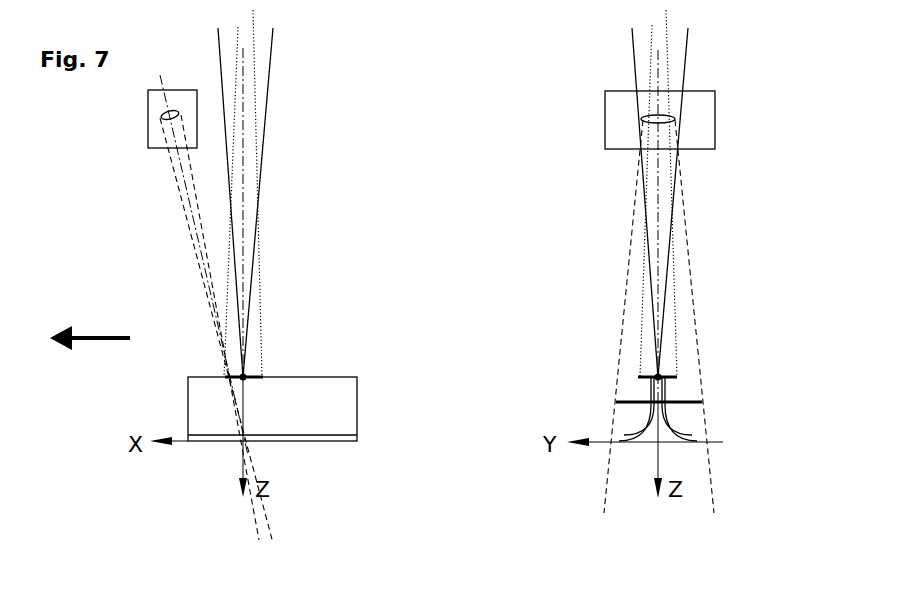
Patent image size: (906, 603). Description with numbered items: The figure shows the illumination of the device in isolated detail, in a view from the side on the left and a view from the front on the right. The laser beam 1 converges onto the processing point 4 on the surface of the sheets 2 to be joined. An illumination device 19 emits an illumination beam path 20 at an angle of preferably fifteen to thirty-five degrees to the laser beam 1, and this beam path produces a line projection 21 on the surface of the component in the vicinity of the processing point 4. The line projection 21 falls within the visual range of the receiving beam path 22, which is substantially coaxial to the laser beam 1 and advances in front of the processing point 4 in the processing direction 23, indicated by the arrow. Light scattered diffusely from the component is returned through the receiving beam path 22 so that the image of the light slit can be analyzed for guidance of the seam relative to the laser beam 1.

The laser beam 1 is at (493, 215).
The sheets 2 is at (486, 446).
The processing point 4 is at (495, 363).
The illumination device 19 is at (385, 126).
The illumination beam path 20 is at (439, 309).
The line projection 21 is at (472, 411).
The receiving beam path 22 is at (450, 193).
The processing direction 23 is at (81, 311).